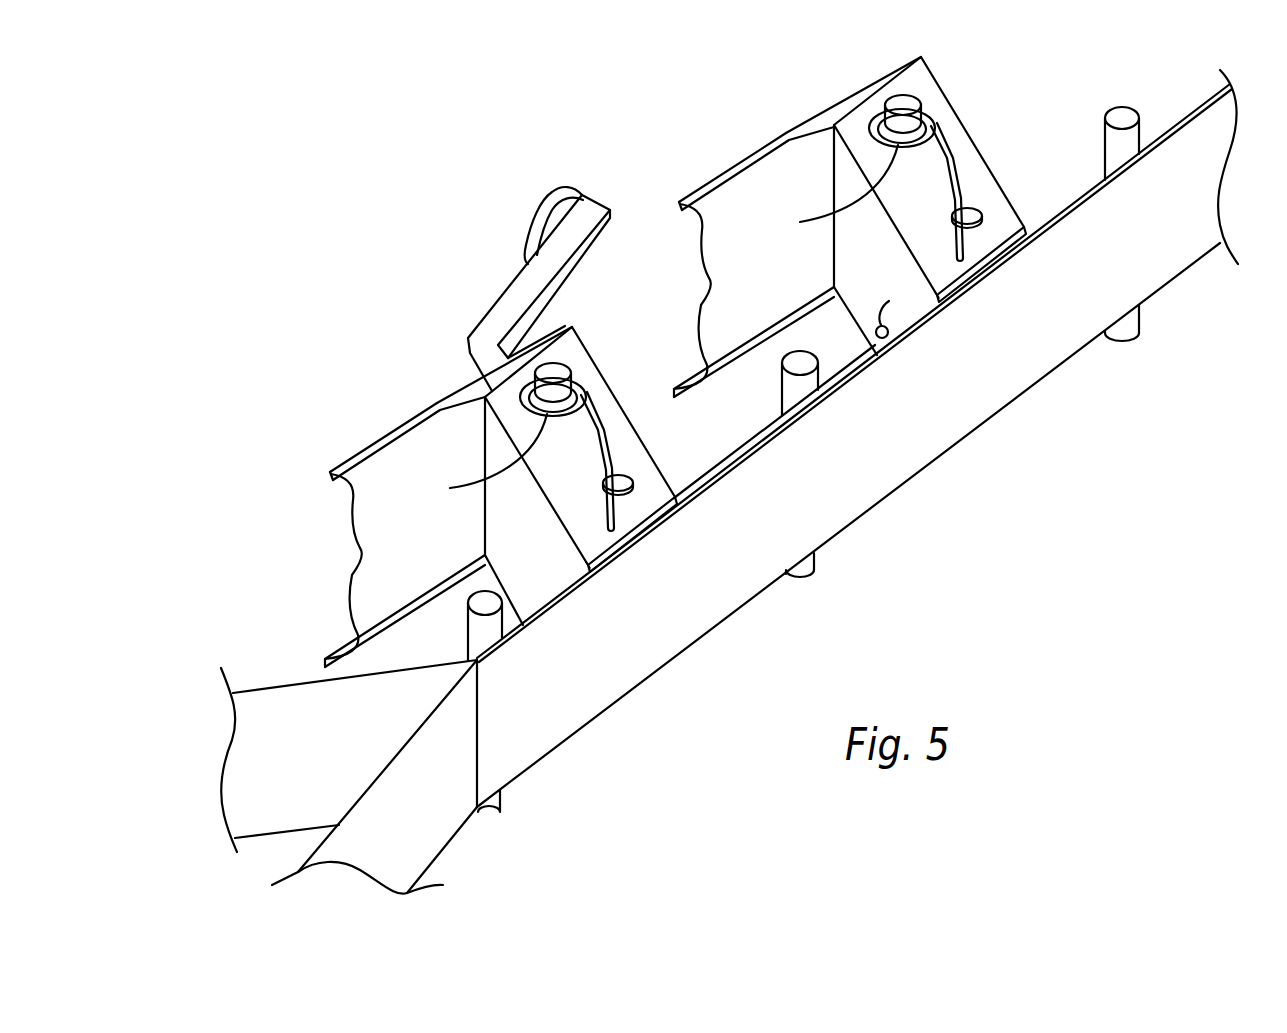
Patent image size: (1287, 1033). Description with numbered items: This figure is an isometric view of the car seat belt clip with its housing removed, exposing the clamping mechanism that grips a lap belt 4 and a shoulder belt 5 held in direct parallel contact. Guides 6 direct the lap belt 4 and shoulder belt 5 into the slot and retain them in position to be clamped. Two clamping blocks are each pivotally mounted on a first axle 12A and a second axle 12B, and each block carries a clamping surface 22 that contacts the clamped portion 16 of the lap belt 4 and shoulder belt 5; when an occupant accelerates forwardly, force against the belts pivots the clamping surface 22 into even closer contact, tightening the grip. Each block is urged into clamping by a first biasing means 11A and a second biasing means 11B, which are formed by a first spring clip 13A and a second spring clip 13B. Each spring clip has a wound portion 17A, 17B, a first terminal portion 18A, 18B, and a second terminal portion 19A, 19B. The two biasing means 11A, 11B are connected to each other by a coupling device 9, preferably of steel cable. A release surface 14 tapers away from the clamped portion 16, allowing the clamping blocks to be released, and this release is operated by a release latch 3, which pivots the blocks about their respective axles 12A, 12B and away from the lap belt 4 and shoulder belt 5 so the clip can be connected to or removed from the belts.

The release latch 3 is at (583, 193).
The lap belt 4 is at (453, 838).
The shoulder belt 5 is at (287, 686).
The guides 6 is at (483, 600).
The coupling device 9 is at (772, 410).
The first biasing means 11A is at (502, 476).
The second biasing means 11B is at (862, 207).
The first axle 12A is at (557, 368).
The second axle 12B is at (908, 100).
The first spring clip 13A is at (597, 398).
The second spring clip 13B is at (945, 140).
The release surface 14 is at (675, 498).
The clamped portion 16 is at (740, 458).
The wound portion of first spring clip 17A is at (466, 487).
The wound portion of second spring clip 17B is at (810, 220).
The first terminal portion of first spring clip 18A is at (607, 451).
The first terminal portion of second spring clip 18B is at (958, 193).
The second terminal portion of first spring clip 19A is at (448, 497).
The second terminal portion of second spring clip 19B is at (797, 227).
The clamping surface 22 is at (588, 564).